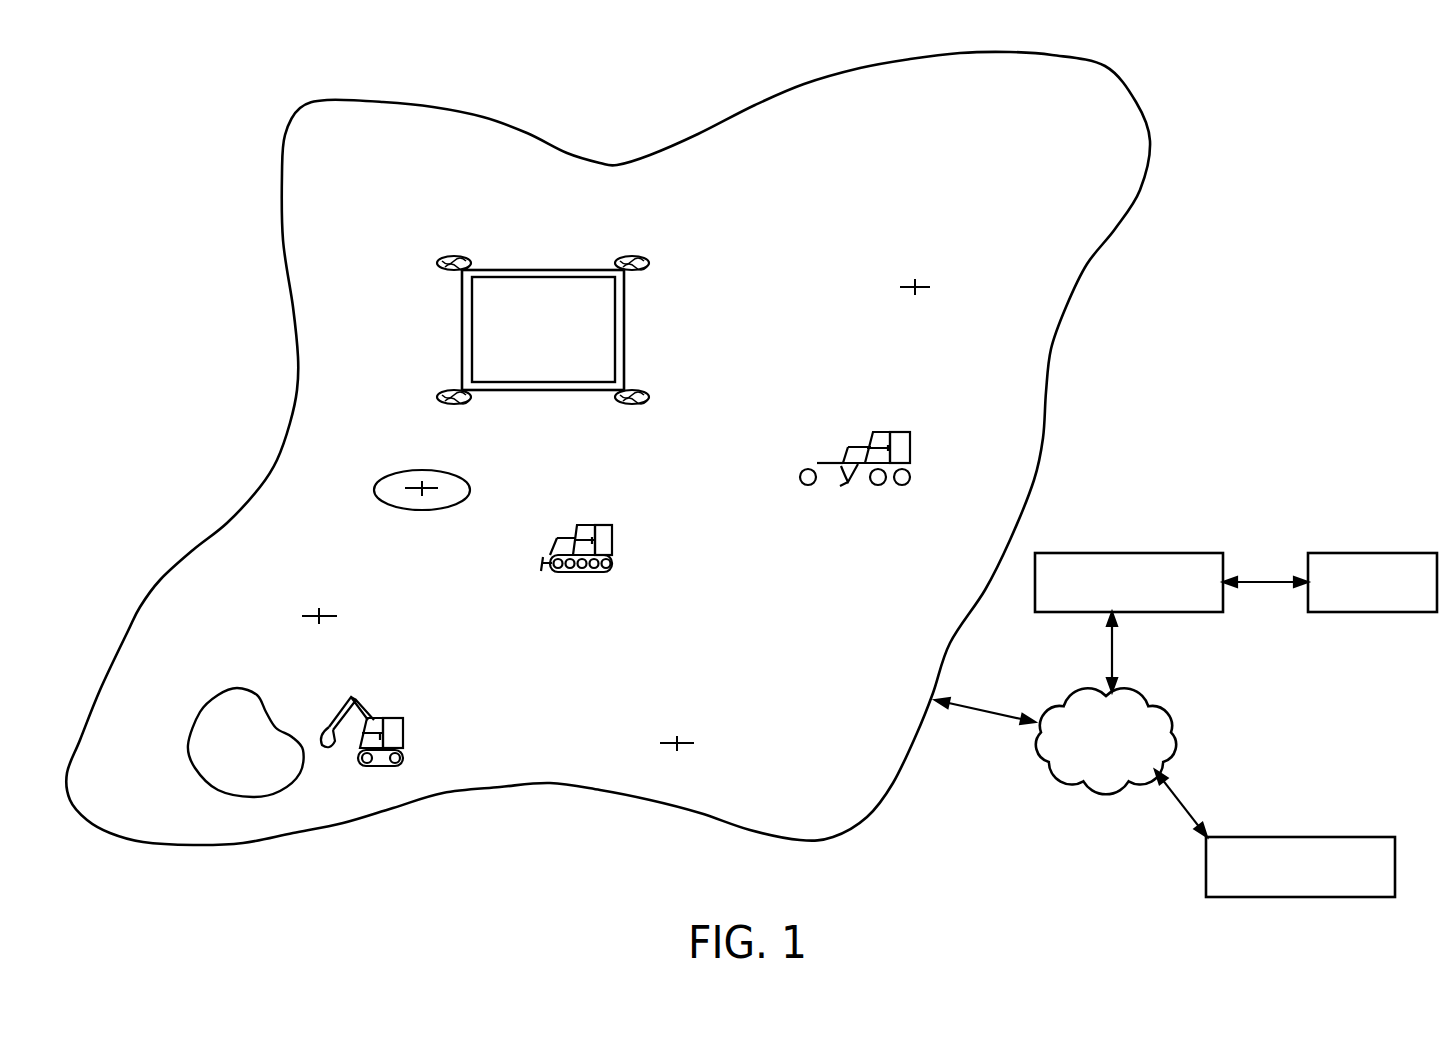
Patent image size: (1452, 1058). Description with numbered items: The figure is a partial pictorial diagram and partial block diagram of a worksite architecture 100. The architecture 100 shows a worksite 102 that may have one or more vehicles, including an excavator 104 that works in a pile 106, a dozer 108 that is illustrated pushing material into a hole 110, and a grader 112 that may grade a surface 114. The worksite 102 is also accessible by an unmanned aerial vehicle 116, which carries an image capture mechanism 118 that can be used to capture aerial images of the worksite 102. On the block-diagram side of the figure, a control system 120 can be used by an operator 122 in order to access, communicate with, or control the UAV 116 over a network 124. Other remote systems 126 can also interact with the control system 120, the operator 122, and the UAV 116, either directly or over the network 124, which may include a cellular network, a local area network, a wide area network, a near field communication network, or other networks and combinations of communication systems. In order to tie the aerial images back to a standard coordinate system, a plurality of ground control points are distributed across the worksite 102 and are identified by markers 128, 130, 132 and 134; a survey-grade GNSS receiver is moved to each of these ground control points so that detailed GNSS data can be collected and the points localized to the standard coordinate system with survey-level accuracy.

The worksite architecture 100 is at (1400, 120).
The worksite 102 is at (755, 105).
The excavator 104 is at (393, 718).
The pile 106 is at (237, 688).
The dozer 108 is at (612, 540).
The hole 110 is at (470, 490).
The grader 112 is at (910, 432).
The surface 114 is at (850, 179).
The unmanned aerial vehicle 116 is at (543, 309).
The image capture mechanism 118 is at (558, 373).
The control system 120 is at (1185, 603).
The operator 122 is at (1387, 603).
The network 124 is at (1118, 766).
The other remote systems 126 is at (1300, 867).
The marker 128 is at (322, 612).
The marker 130 is at (683, 738).
The marker 132 is at (920, 283).
The marker 134 is at (427, 480).